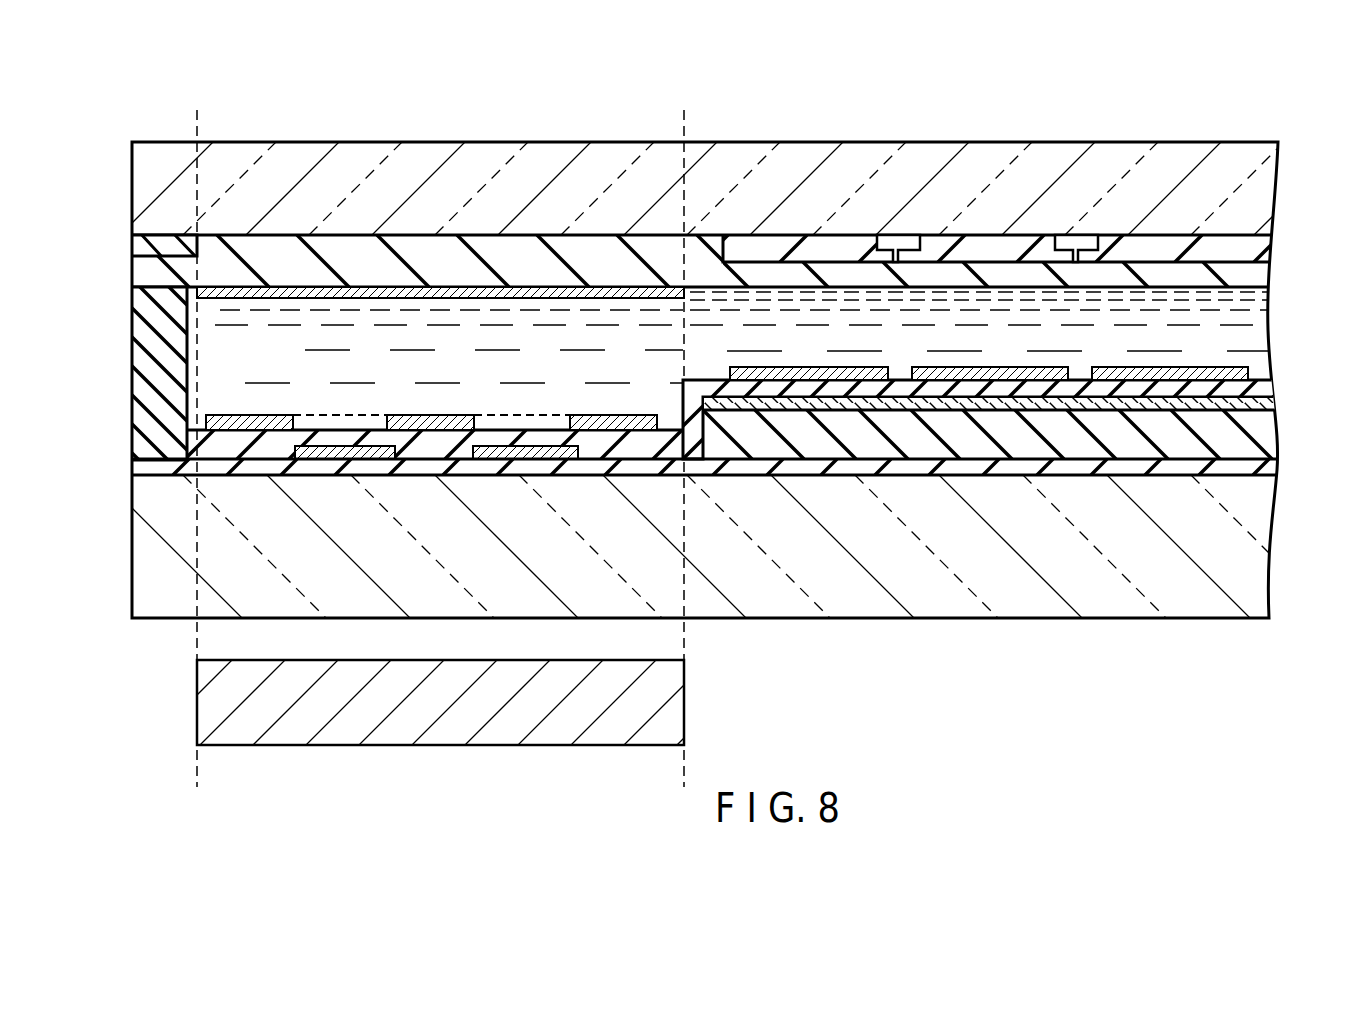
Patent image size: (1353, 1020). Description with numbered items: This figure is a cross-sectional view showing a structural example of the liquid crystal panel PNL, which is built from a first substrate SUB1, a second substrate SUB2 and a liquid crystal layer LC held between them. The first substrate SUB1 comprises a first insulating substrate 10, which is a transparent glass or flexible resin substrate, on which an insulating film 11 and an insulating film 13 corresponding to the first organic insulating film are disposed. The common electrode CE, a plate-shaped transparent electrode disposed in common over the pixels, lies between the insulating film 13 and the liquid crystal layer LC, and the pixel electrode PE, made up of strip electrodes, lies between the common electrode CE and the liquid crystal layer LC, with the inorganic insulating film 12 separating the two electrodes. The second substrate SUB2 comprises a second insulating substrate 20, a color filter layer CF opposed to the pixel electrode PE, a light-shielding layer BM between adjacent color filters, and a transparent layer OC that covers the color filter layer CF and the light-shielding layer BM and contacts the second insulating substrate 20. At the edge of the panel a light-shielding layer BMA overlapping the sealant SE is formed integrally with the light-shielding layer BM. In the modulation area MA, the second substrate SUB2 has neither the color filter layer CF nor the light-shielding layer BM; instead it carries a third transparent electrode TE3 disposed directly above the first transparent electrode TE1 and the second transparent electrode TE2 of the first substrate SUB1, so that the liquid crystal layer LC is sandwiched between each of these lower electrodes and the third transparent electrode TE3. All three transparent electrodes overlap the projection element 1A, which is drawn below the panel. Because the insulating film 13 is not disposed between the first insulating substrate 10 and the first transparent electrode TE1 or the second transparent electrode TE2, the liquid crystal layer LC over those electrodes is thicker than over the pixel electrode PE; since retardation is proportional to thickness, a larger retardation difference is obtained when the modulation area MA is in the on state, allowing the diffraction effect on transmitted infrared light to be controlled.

The modulation area MA is at (684, 95).
The third transparent electrode TE3 is at (569, 289).
The light-shielding layer BM is at (889, 242).
The second substrate SUB2 is at (733, 151).
The second insulating substrate 20 is at (1267, 213).
The color filter layer CF is at (1272, 246).
The transparent layer OC is at (1265, 276).
The light-shielding layer BMA is at (138, 246).
The sealant SE is at (138, 410).
The liquid crystal layer LC is at (1252, 349).
The pixel electrode PE is at (794, 377).
The insulating film 12 is at (1257, 391).
The common electrode CE is at (1258, 405).
The insulating film 13 is at (1258, 446).
The insulating film 11 is at (1272, 466).
The first insulating substrate 10 is at (1255, 576).
The first transparent electrode TE1 is at (331, 461).
The second transparent electrode TE2 is at (423, 432).
The projection element 1A is at (685, 700).
The liquid crystal panel PNL is at (993, 628).
The first substrate SUB1 is at (726, 593).